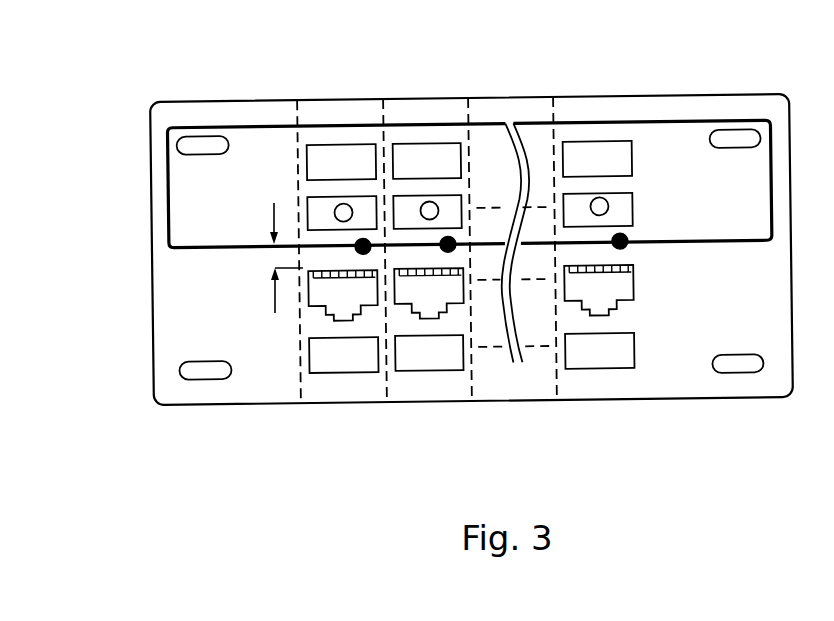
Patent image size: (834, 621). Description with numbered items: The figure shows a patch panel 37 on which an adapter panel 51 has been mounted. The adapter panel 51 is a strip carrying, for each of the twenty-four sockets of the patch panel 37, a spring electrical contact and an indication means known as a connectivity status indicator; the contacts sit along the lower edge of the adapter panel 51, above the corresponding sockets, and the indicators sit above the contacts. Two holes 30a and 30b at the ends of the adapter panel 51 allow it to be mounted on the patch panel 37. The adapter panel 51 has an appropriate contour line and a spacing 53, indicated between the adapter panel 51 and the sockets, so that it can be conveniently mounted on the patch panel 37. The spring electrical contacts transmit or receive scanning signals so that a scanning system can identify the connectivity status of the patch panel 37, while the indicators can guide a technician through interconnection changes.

The patch panel 37 is at (150, 283).
The hole 30a is at (195, 142).
The hole 30b is at (737, 133).
The adapter panel 51 is at (168, 178).
The spacing 53 is at (272, 258).